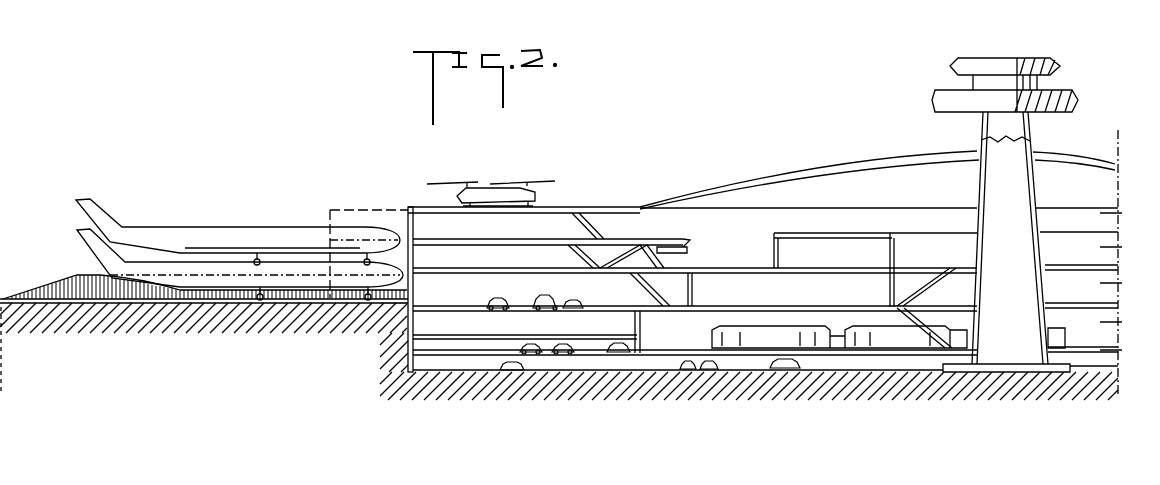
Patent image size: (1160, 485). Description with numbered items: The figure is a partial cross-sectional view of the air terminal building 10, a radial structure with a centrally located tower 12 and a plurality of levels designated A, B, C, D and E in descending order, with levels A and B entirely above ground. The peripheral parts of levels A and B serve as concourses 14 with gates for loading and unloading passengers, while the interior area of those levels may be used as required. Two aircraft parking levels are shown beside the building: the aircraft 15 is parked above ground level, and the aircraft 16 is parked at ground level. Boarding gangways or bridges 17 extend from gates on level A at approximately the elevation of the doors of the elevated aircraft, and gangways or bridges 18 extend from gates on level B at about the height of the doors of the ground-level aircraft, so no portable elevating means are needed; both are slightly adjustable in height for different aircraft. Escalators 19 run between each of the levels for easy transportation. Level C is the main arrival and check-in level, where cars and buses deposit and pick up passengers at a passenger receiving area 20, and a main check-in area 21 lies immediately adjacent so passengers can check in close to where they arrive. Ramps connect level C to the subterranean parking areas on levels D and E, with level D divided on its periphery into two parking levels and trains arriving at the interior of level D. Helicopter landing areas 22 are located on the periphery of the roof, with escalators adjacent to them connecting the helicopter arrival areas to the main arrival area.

The air terminal building 10 is at (1122, 148).
The tower 12 is at (1045, 127).
The concourses 14 is at (421, 258).
The aircraft 15 is at (270, 225).
The aircraft 16 is at (219, 284).
The boarding gangways or bridges 17 is at (352, 212).
The gangways or bridges 18 is at (398, 290).
The escalators 19 is at (660, 285).
The passenger receiving area 20 is at (633, 297).
The main check-in area 21 is at (733, 278).
The helicopter landing areas 22 is at (563, 207).